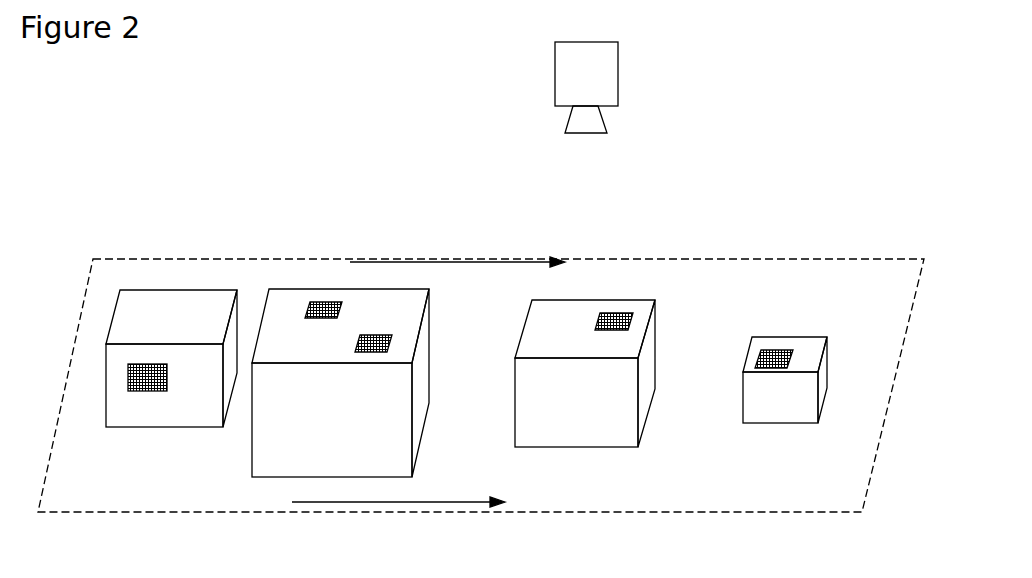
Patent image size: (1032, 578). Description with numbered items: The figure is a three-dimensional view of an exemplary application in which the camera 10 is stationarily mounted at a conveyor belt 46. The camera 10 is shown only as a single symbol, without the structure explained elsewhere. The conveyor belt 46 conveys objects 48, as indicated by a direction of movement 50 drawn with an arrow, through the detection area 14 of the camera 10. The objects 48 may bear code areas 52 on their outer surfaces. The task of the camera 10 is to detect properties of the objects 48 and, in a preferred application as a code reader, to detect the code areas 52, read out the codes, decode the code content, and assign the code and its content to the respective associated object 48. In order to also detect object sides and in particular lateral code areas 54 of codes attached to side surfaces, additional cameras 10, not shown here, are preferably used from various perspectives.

The camera 10 is at (603, 78).
The detection area 14 is at (582, 205).
The conveyor belt 46 is at (829, 513).
The object 48 is at (130, 303).
The direction of movement 50 is at (381, 502).
The code area 52 is at (367, 337).
The lateral code area 54 is at (140, 382).